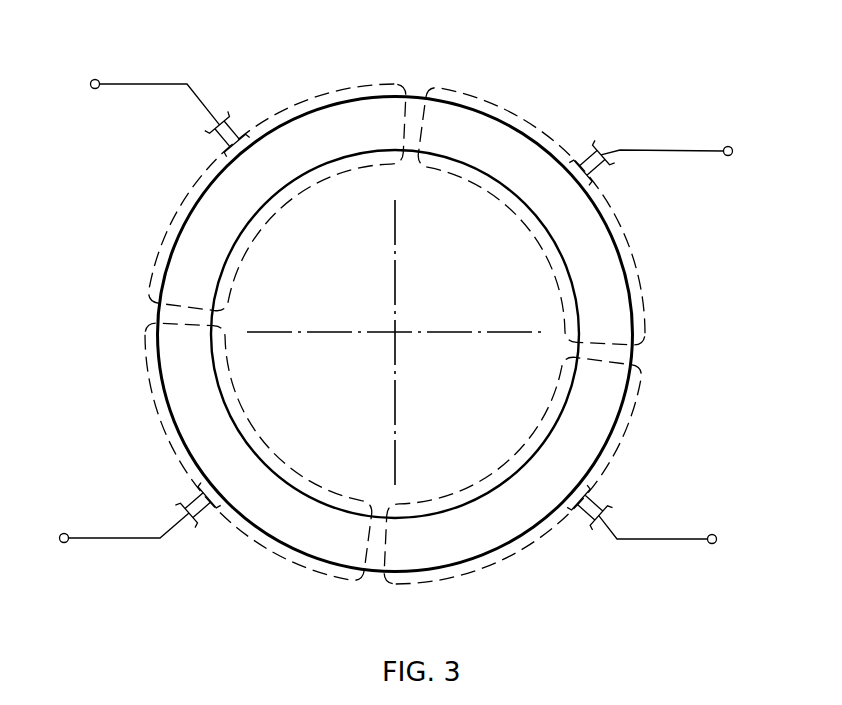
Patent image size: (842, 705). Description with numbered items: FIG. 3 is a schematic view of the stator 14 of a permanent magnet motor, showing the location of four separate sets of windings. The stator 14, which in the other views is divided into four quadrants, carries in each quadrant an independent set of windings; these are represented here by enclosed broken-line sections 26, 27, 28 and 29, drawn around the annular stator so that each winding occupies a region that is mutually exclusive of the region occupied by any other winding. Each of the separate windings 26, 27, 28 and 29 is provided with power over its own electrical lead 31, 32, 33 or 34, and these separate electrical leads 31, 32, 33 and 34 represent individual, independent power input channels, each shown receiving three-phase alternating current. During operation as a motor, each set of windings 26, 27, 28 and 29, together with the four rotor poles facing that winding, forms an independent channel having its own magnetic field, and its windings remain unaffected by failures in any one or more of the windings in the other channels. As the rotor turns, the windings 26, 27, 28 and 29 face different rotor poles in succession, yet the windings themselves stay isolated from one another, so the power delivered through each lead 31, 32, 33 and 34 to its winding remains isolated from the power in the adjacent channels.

The stator 14 is at (618, 408).
The winding 26 is at (282, 563).
The winding 27 is at (550, 535).
The winding 28 is at (627, 237).
The winding 29 is at (322, 88).
The electrical lead 31 is at (143, 540).
The electrical lead 32 is at (628, 541).
The electrical lead 33 is at (618, 148).
The electrical lead 34 is at (196, 90).